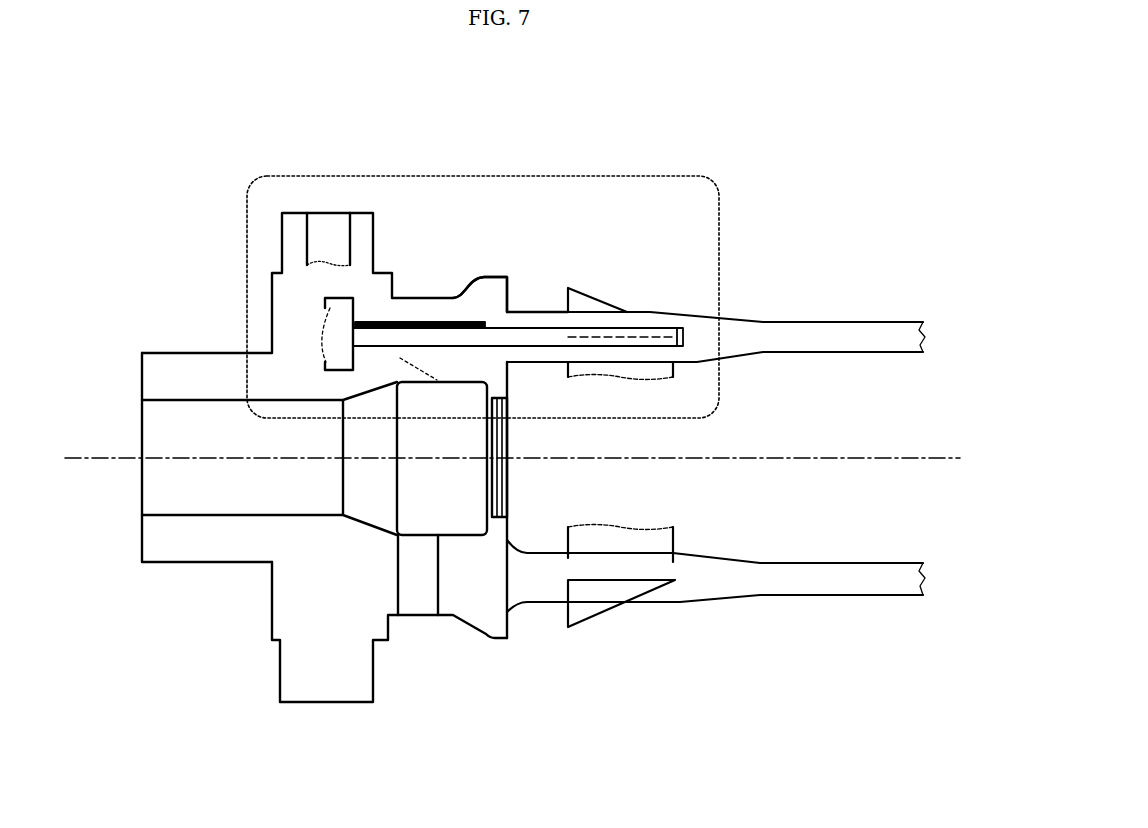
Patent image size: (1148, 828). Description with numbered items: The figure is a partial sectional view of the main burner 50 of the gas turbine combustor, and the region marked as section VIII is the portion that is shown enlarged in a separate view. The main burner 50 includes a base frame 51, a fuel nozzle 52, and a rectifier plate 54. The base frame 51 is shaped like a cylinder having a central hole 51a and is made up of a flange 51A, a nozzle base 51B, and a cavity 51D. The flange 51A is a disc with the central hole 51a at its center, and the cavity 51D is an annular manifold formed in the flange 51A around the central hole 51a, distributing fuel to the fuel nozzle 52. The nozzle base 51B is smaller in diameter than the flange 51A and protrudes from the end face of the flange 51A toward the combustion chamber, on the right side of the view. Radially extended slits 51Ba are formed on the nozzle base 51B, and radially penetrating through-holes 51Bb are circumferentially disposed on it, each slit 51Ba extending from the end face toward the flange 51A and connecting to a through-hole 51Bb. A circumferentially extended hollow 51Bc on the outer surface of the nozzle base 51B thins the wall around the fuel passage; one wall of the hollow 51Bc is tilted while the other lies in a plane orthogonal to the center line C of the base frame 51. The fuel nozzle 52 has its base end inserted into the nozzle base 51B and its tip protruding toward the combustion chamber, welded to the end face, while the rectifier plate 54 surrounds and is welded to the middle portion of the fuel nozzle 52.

The main burner 50 is at (503, 138).
The section VIII is at (243, 177).
The center line C is at (501, 459).
The base frame 51 is at (320, 717).
The flange 51A is at (267, 600).
The central hole 51a is at (164, 402).
The nozzle base 51B is at (512, 440).
The slit 51Ba is at (485, 628).
The through-hole 51Bb is at (438, 298).
The hollow 51Bc is at (458, 298).
The cavity 51D is at (350, 317).
The fuel nozzle 52 is at (772, 598).
The rectifier plate 54 is at (585, 626).